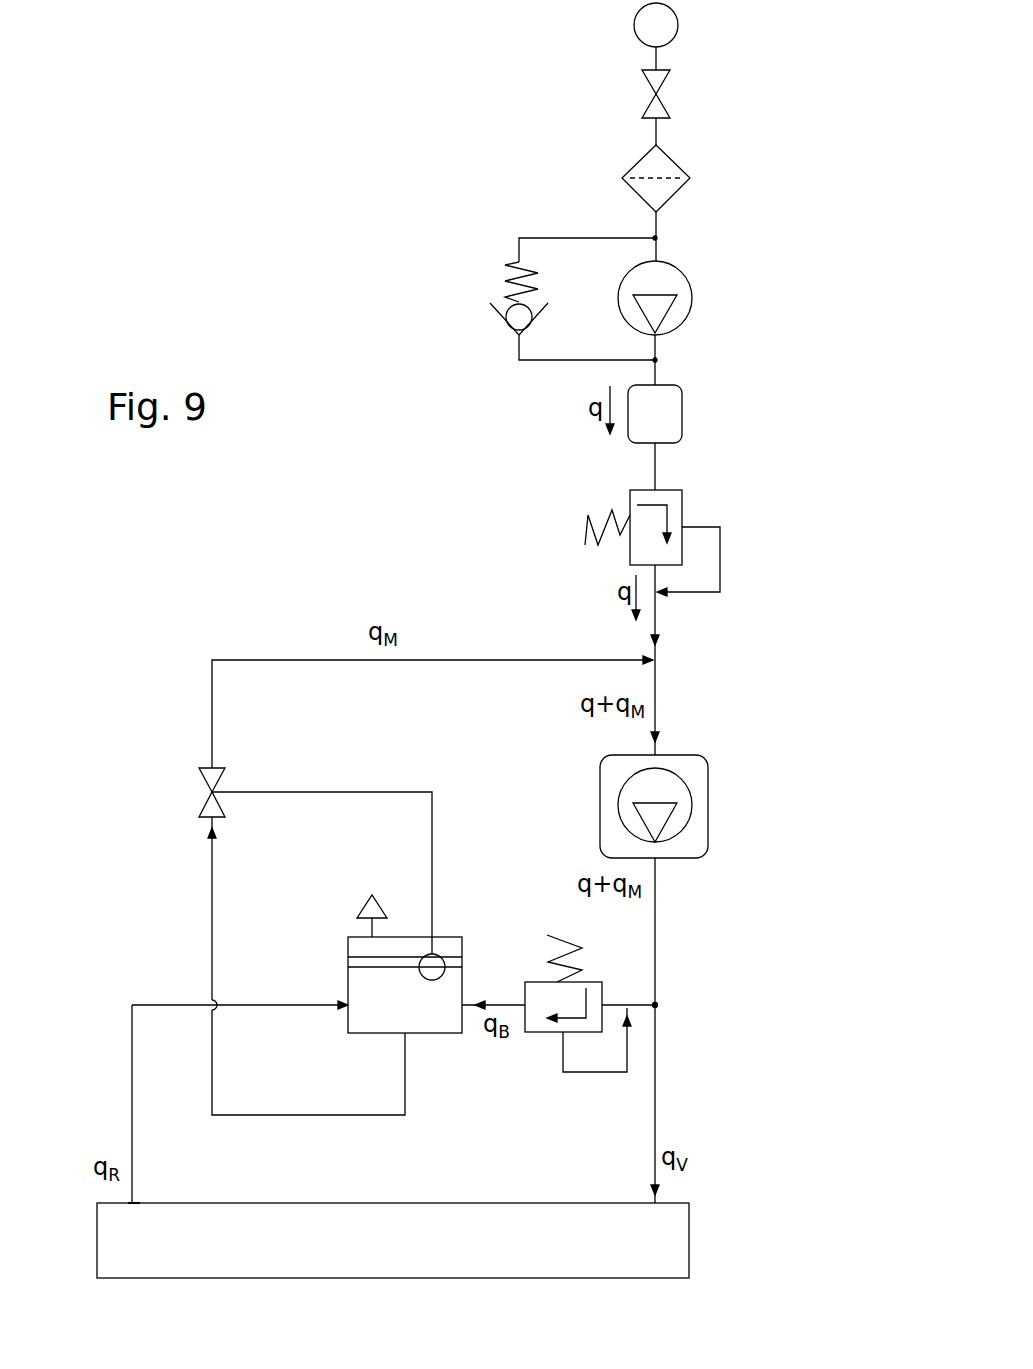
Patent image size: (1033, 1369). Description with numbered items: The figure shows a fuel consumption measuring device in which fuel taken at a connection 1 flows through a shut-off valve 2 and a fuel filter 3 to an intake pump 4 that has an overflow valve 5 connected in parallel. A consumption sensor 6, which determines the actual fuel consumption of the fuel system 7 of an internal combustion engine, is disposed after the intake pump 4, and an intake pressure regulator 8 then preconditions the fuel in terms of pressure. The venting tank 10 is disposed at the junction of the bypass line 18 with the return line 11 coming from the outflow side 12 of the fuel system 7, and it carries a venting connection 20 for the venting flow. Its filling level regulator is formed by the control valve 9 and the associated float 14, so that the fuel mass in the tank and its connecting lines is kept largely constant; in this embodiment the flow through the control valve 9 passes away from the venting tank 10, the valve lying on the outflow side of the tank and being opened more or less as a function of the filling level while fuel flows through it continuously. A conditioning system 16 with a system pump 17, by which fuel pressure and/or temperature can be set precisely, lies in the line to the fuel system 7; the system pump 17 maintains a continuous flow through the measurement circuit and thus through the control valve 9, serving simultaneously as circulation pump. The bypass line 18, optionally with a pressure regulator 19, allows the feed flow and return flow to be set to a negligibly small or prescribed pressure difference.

The connection 1 is at (679, 22).
The shut-off valve 2 is at (662, 86).
The fuel filter 3 is at (676, 162).
The intake pump 4 is at (693, 296).
The overflow valve 5 is at (503, 321).
The consumption sensor 6 is at (683, 412).
The fuel system 7 is at (692, 1238).
The intake pressure regulator 8 is at (684, 507).
The control valve 9 is at (200, 783).
The venting tank 10 is at (360, 1037).
The return pipe 11 is at (128, 1106).
The outflow side 12 is at (137, 1203).
The float 14 is at (418, 960).
The conditioning system 16 is at (710, 790).
The system pump 17 is at (687, 826).
The bypass line 18 is at (520, 1002).
The pressure regulator 19 is at (550, 1036).
The venting connection 20 is at (363, 931).